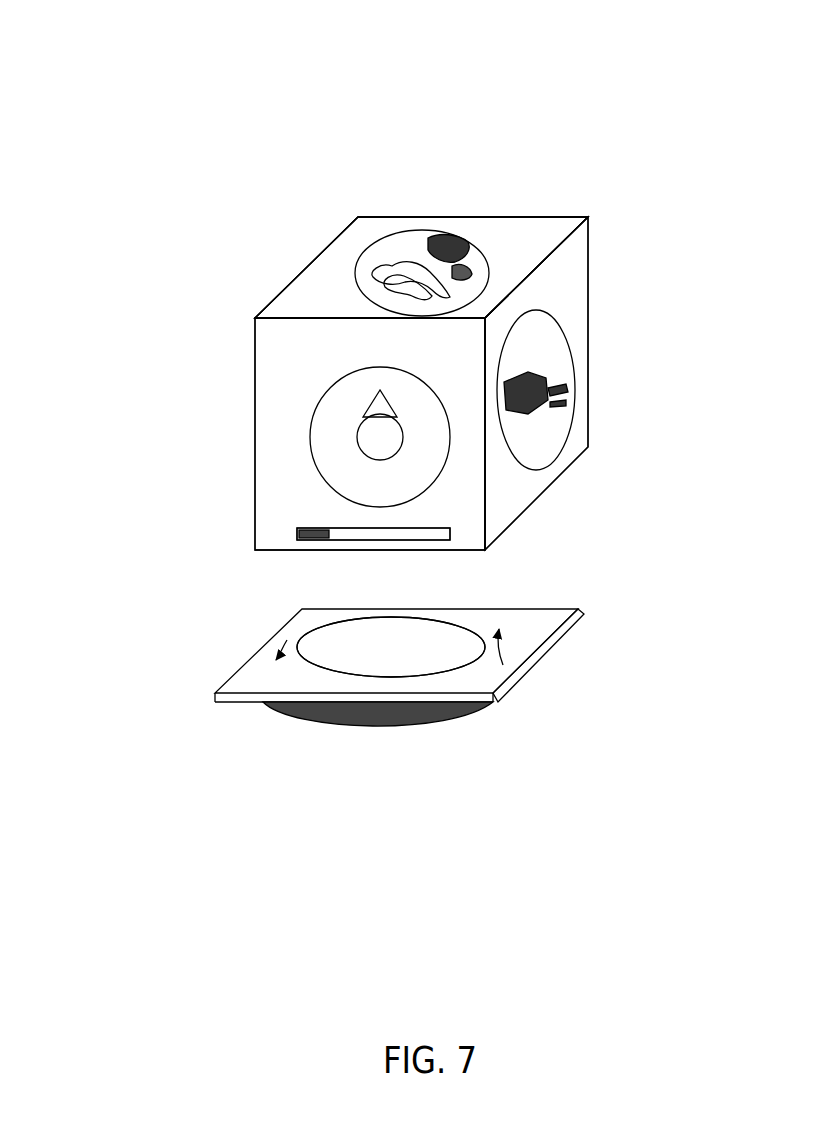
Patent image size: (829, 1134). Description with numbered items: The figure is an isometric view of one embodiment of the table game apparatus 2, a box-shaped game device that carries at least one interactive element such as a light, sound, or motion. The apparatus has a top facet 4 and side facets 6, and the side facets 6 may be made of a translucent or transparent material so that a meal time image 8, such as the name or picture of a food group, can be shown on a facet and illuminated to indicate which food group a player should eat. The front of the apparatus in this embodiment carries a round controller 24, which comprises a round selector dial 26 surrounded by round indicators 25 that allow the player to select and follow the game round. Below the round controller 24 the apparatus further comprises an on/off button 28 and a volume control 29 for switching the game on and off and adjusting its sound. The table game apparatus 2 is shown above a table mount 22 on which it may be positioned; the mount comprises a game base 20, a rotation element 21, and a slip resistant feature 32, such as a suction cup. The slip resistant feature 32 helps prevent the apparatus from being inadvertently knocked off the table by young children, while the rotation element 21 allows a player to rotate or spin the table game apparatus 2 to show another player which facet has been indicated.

The table game apparatus 2 is at (511, 122).
The top facet 4 is at (403, 210).
The side facets 6 is at (531, 240).
The meal time image 8 is at (435, 222).
The round controller 24 is at (300, 340).
The round indicators 25 is at (287, 400).
The round selector dial 26 is at (353, 445).
The on/off button 28 is at (283, 538).
The volume control 29 is at (440, 539).
The game base 20 is at (288, 710).
The table mount 22 is at (540, 630).
The rotation element 21 is at (444, 662).
The slip resistant feature 32 is at (404, 723).